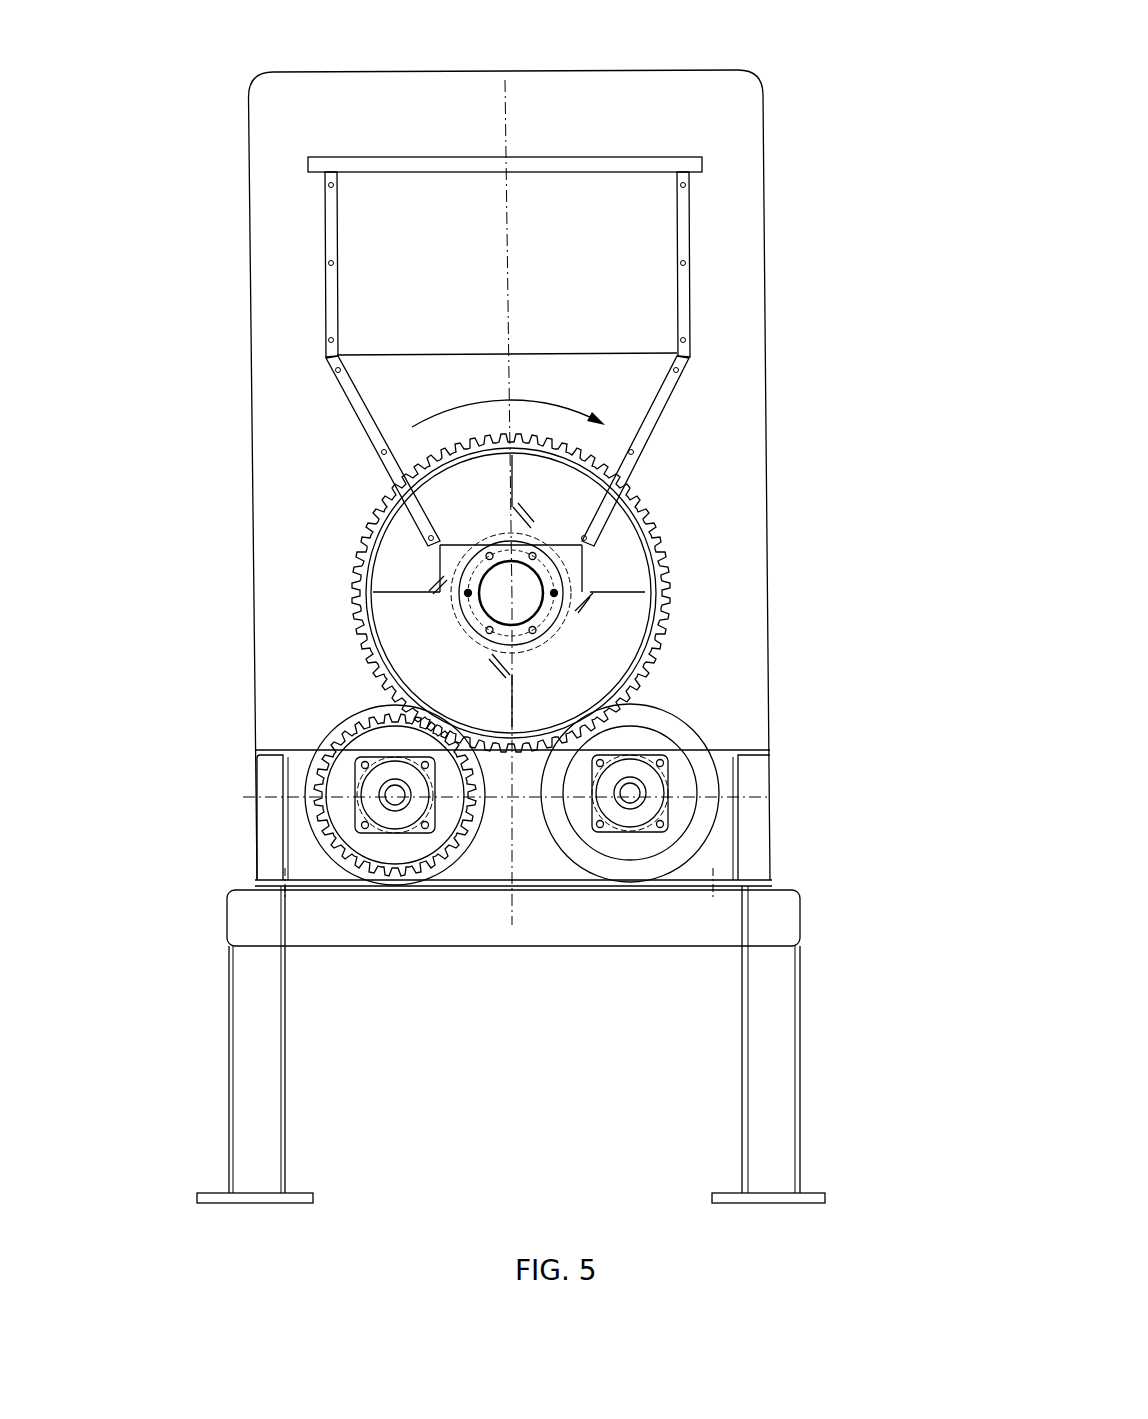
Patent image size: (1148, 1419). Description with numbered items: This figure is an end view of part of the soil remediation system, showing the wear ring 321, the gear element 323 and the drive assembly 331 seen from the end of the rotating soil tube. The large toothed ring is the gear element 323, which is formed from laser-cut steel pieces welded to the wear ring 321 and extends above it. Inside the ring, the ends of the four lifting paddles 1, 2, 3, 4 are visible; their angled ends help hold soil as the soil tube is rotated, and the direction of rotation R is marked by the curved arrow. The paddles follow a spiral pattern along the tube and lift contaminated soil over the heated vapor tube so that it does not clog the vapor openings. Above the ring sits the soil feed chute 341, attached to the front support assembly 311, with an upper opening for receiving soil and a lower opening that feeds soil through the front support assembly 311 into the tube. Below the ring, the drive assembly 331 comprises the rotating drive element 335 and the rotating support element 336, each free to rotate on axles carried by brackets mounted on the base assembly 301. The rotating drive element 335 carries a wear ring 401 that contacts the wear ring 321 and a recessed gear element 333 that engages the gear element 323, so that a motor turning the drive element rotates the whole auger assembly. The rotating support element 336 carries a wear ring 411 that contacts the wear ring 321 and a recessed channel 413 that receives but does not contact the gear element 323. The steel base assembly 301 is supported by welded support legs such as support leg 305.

The front support assembly 311 is at (485, 95).
The soil feed chute 341 is at (657, 155).
The wear ring 321 is at (660, 540).
The gear element 323 is at (672, 608).
The lifting paddle 1 is at (512, 483).
The lifting paddle 2 is at (618, 594).
The lifting paddle 3 is at (512, 702).
The lifting paddle 4 is at (402, 592).
The direction of rotation R is at (508, 396).
The drive assembly 331 is at (243, 797).
The gear element 333 is at (320, 823).
The rotating drive element 335 is at (335, 723).
The rotating support element 336 is at (690, 718).
The wear ring 401 is at (338, 865).
The wear ring 411 is at (563, 850).
The recessed channel 413 is at (635, 860).
The base assembly 301 is at (792, 923).
The support leg 305 is at (255, 1015).